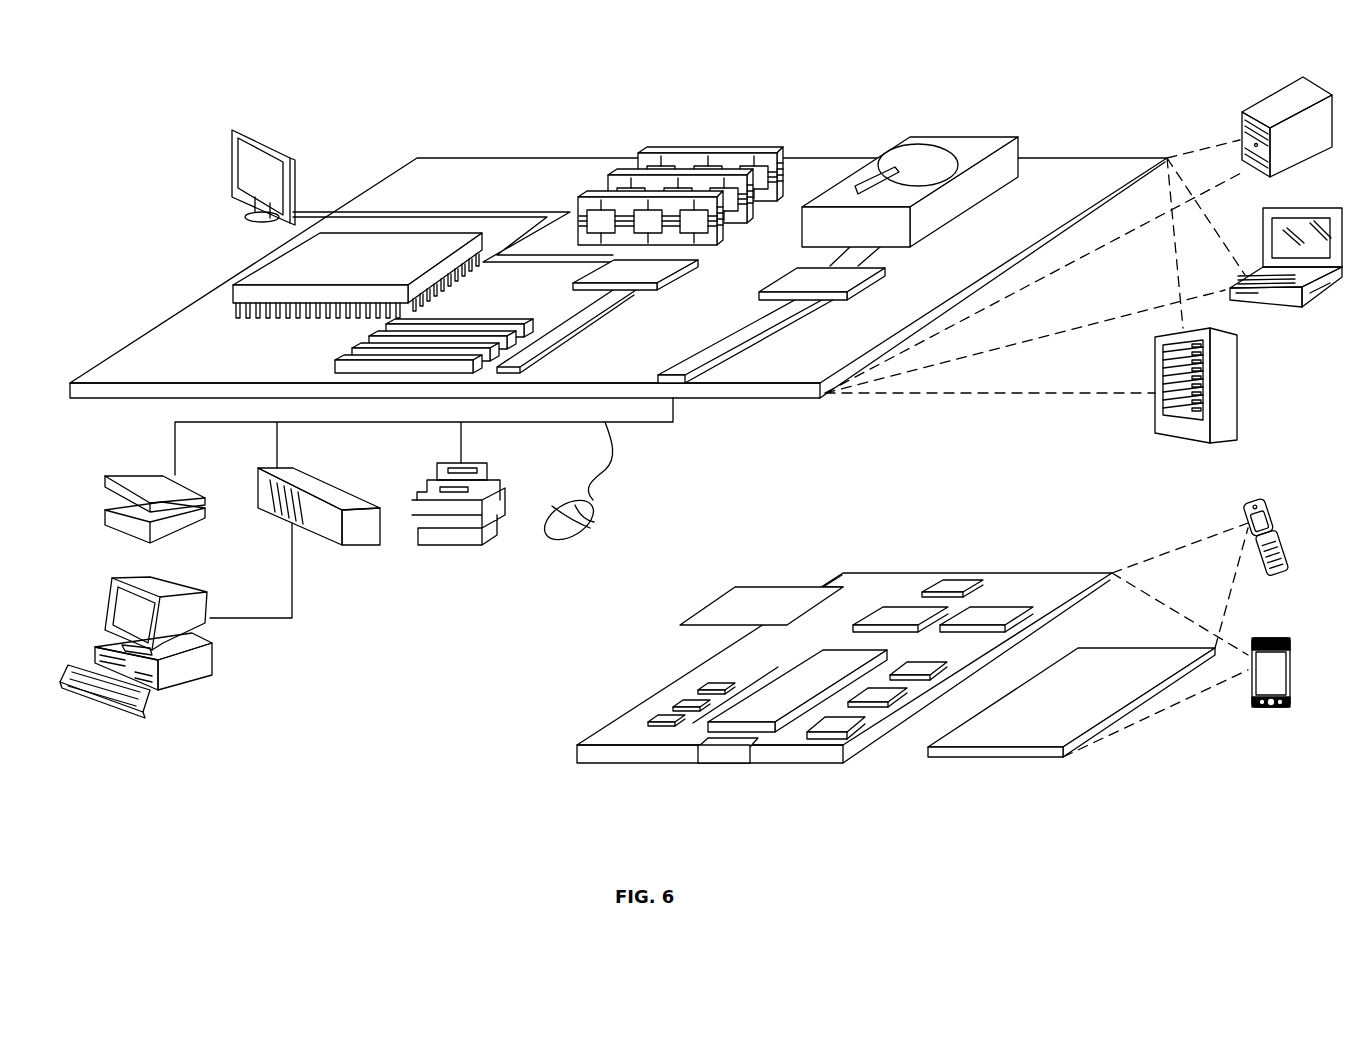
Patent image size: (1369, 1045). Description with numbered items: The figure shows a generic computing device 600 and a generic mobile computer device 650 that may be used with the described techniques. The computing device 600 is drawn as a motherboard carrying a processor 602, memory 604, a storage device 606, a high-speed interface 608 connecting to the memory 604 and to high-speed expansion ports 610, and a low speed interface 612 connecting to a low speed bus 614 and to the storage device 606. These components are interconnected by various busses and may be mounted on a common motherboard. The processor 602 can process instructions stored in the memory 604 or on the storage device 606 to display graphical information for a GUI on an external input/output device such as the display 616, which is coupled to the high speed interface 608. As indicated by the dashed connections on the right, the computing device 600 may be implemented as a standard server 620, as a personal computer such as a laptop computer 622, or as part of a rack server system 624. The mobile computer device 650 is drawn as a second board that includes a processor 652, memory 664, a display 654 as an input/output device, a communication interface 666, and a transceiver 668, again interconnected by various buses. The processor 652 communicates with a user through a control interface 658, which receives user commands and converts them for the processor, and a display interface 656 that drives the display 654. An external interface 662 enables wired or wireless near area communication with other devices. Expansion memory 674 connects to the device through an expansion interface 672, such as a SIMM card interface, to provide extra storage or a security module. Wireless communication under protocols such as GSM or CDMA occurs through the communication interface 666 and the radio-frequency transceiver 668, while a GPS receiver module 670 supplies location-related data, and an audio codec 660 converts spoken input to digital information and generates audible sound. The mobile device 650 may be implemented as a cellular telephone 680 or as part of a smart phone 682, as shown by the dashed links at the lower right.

The computing device 600 is at (701, 392).
The processor 602 is at (260, 264).
The memory 604 is at (718, 152).
The storage device 606 is at (949, 137).
The high-speed interface 608 is at (647, 272).
The high-speed expansion ports 610 is at (362, 345).
The low speed interface 612 is at (794, 277).
The low speed bus 614 is at (680, 368).
The display 616 is at (233, 129).
The standard server 620 is at (1262, 105).
The laptop computer 622 is at (1318, 210).
The rack server system 624 is at (1240, 385).
The mobile computer device 650 is at (525, 773).
The processor 652 is at (767, 695).
The display 654 is at (1112, 665).
The display interface 656 is at (858, 719).
The control interface 658 is at (880, 695).
The audio codec 660 is at (922, 664).
The external interface 662 is at (723, 748).
The memory 664 is at (680, 700).
The communication interface 666 is at (902, 608).
The transceiver 668 is at (993, 608).
The GPS receiver module 670 is at (953, 580).
The expansion interface 672 is at (829, 587).
The expansion memory 674 is at (742, 587).
The cellular telephone 680 is at (1260, 500).
The smart phone 682 is at (1262, 637).